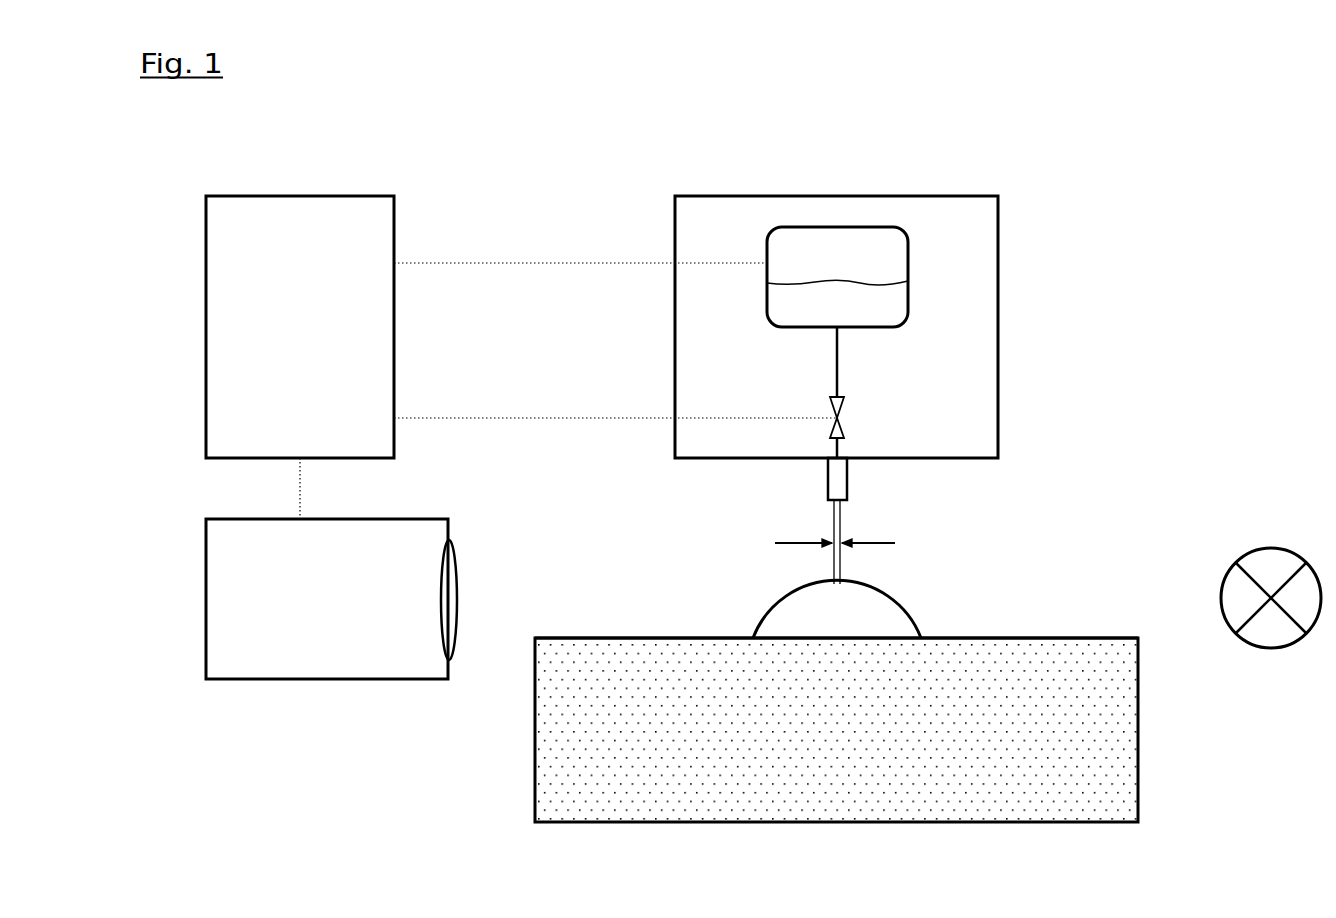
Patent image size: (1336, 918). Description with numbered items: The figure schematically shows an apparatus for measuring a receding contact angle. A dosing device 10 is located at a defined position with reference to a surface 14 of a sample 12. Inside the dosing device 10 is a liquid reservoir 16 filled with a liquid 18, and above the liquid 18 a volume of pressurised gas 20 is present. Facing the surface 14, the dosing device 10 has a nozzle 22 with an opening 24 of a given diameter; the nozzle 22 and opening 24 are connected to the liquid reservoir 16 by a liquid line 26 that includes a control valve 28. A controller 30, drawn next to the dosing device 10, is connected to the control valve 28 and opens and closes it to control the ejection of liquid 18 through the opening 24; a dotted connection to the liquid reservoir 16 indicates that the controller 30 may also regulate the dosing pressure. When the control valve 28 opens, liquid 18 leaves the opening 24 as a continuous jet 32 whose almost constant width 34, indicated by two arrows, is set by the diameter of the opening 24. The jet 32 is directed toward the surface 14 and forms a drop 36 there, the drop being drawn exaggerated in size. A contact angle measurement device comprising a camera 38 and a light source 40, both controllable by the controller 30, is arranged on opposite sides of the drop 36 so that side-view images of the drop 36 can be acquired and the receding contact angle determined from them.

The dosing device 10 is at (999, 229).
The sample 12 is at (1139, 790).
The surface 14 is at (1071, 638).
The liquid reservoir 16 is at (910, 238).
The liquid 18 is at (789, 303).
The pressurised gas 20 is at (785, 249).
The nozzle 22 is at (848, 475).
The opening 24 is at (833, 512).
The liquid line 26 is at (836, 372).
The control valve 28 is at (845, 407).
The controller 30 is at (356, 196).
The jet 32 is at (842, 525).
The width 34 is at (852, 543).
The drop 36 is at (895, 600).
The camera 38 is at (290, 681).
The light source 40 is at (1283, 548).